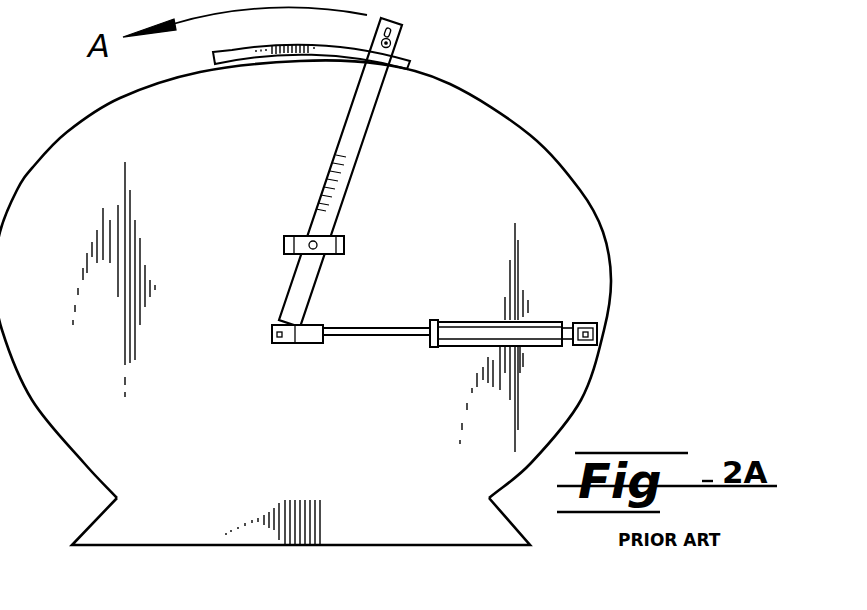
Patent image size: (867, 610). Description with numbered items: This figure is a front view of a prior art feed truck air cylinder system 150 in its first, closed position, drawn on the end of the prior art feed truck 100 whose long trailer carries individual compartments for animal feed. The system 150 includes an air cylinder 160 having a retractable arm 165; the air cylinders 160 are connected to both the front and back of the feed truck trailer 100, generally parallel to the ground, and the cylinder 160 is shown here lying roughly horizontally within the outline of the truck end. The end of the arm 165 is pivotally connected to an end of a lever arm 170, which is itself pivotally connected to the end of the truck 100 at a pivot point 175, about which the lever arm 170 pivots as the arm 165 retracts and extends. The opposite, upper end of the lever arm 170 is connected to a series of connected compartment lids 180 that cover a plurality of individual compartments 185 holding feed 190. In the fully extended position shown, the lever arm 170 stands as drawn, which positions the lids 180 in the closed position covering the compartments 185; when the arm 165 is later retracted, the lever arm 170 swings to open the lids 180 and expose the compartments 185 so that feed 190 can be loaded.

The feed truck 100 is at (613, 99).
The air cylinder system 150 is at (632, 328).
The air cylinder 160 is at (478, 322).
The retractable arm 165 is at (360, 336).
The lever arm 170 is at (358, 157).
The pivot point 175 is at (284, 243).
The compartment lids 180 is at (232, 56).
The individual compartments 185 is at (268, 116).
The feed 190 is at (231, 195).